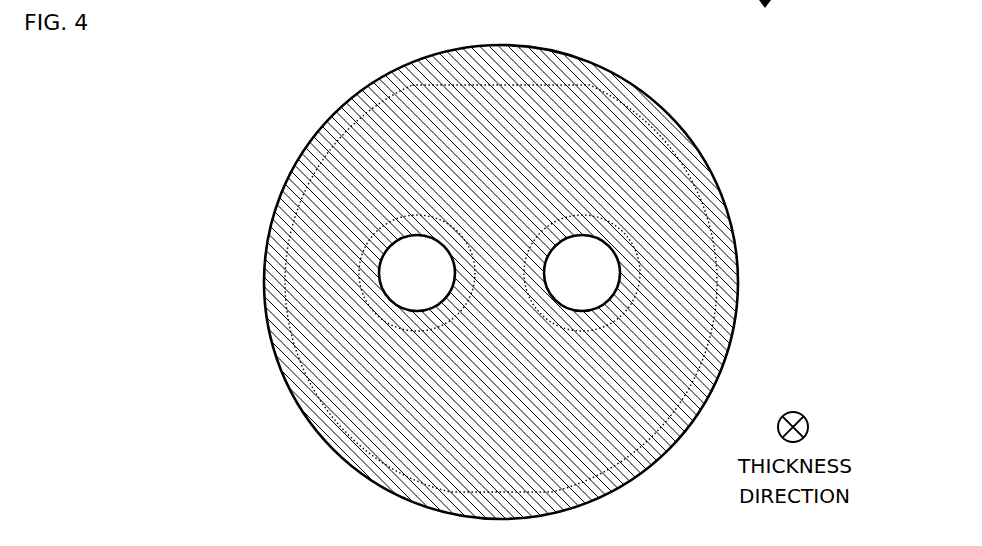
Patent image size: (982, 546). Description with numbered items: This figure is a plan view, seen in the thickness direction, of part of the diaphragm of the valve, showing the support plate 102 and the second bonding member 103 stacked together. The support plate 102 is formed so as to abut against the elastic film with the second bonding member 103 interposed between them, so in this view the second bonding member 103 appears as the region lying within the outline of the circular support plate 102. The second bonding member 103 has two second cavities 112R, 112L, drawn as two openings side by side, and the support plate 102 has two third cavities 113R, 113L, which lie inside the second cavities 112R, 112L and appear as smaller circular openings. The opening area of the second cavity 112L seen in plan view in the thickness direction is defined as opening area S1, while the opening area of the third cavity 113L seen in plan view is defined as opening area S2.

The support plate 102 is at (720, 183).
The second bonding member 103 is at (642, 115).
The second cavity 112L is at (360, 270).
The second cavity 112R is at (640, 277).
The third cavity 113L is at (380, 262).
The third cavity 113R is at (619, 260).